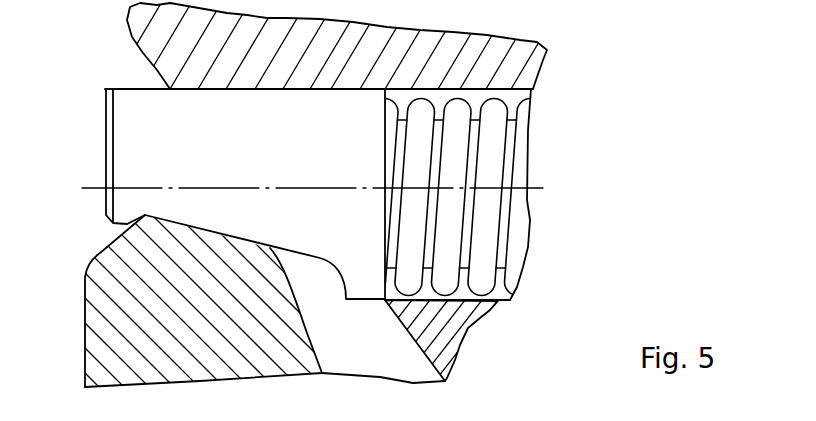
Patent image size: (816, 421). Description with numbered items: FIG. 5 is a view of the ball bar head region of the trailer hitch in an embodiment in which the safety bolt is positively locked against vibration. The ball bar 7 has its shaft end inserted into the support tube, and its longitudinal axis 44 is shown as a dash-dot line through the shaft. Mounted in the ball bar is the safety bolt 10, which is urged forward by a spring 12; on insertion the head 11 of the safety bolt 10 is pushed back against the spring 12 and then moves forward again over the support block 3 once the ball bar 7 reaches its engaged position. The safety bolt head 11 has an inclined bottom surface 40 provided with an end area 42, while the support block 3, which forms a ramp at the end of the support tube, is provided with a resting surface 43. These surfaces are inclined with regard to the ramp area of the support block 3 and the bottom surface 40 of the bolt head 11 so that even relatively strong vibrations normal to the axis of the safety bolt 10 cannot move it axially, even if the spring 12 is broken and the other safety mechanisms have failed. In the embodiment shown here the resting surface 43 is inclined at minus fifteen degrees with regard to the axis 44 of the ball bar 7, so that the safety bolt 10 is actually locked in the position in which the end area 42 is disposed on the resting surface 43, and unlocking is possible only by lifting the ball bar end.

The ball bar 7 is at (138, 32).
The safety bolt head 11 is at (128, 113).
The support block 3 is at (97, 323).
The safety bolt 10 is at (510, 150).
The spring 12 is at (483, 258).
The axis of the ball bar 44 is at (543, 187).
The end area 42 is at (124, 223).
The resting surface 43 is at (149, 223).
The inclined bottom surface 40 is at (304, 256).